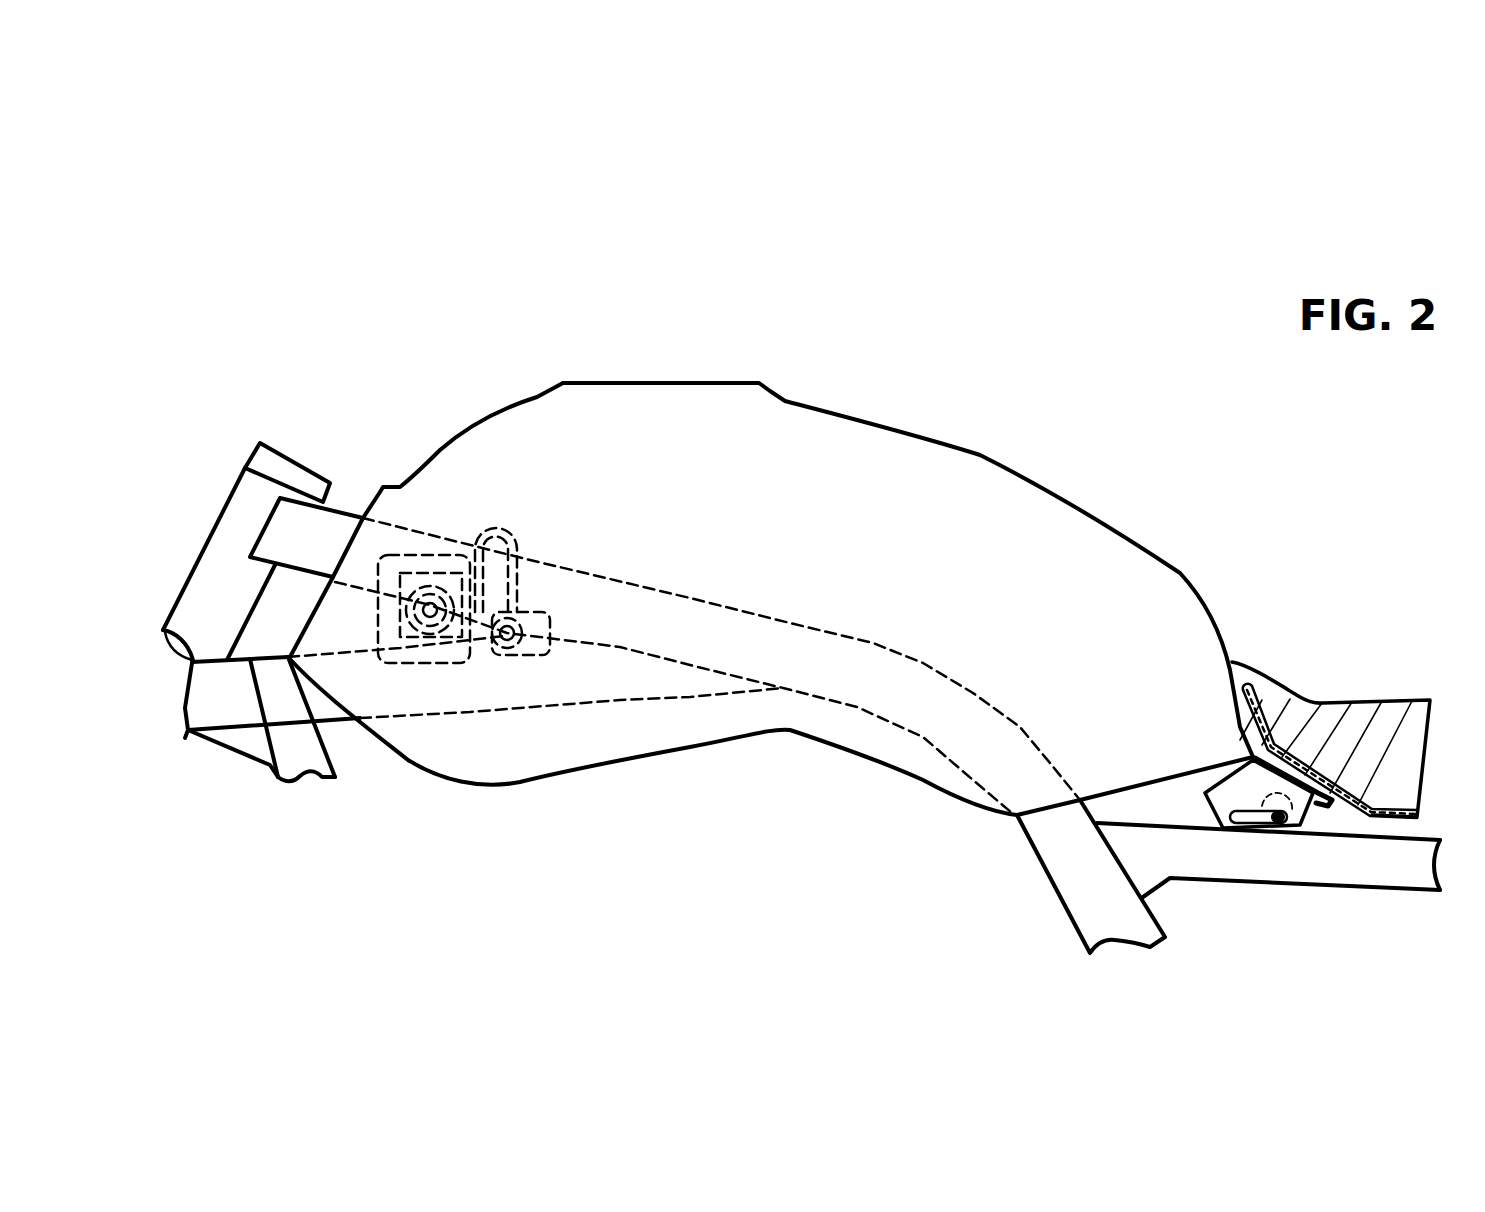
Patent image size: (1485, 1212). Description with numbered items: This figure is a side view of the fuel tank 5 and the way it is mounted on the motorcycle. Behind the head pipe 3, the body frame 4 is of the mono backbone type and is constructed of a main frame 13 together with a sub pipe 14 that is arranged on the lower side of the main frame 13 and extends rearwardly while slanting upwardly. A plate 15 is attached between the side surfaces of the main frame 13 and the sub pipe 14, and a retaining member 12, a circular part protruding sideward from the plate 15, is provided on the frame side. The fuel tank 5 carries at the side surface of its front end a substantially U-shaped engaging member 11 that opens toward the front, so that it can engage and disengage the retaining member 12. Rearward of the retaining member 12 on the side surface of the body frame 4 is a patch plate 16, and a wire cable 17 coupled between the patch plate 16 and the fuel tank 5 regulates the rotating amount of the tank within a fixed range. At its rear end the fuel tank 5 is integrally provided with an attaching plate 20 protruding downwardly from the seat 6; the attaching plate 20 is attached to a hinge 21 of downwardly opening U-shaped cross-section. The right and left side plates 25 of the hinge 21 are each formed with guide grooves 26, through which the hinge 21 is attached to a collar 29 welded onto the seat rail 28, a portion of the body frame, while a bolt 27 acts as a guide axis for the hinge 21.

The head pipe 3 is at (228, 520).
The body frame 4 is at (347, 503).
The fuel tank 5 is at (1018, 494).
The seat 6 is at (1393, 700).
The substantially U-shaped engaging member 11 is at (417, 565).
The retaining member 12 is at (415, 663).
The main frame 13 is at (293, 530).
The sub pipe 14 is at (228, 710).
The plate 15 is at (447, 663).
The patch plate 16 is at (533, 657).
The wire cable 17 is at (500, 532).
The attaching plate 20 is at (1308, 700).
The hinge 21 is at (1233, 828).
The side plates 25 is at (1210, 797).
The guide grooves 26 is at (1247, 793).
The bolt 27 is at (1275, 830).
The seat rail 28 is at (1322, 862).
The collar 29 is at (1310, 812).